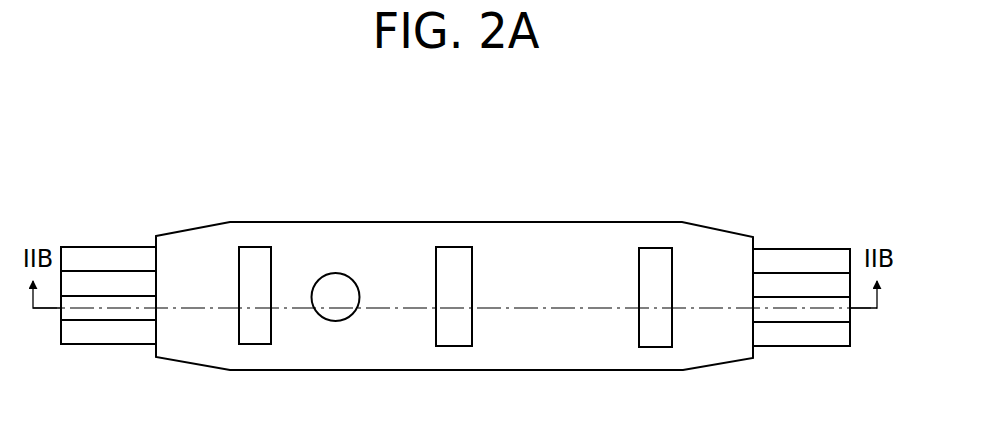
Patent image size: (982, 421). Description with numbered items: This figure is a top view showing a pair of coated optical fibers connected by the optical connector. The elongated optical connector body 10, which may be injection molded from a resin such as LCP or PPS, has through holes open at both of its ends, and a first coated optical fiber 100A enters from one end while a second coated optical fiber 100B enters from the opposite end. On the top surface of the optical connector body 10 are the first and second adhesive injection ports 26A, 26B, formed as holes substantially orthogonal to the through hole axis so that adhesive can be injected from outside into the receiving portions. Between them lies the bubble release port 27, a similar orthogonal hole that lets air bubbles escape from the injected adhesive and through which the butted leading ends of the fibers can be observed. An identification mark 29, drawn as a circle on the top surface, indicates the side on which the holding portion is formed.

The optical connector body 10 is at (548, 207).
The first coated optical fiber 100A is at (104, 258).
The second coated optical fiber 100B is at (800, 262).
The first adhesive injection port 26A is at (258, 253).
The second adhesive injection port 26B is at (651, 255).
The bubble release port 27 is at (455, 253).
The identification mark 29 is at (335, 282).